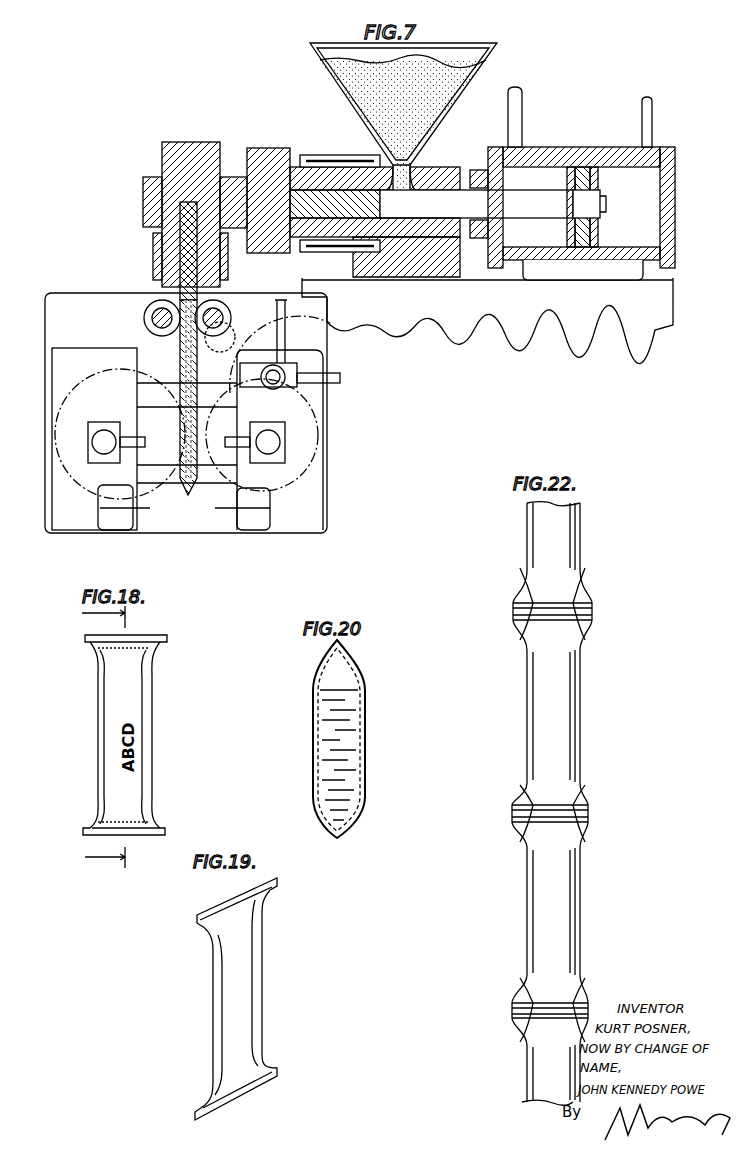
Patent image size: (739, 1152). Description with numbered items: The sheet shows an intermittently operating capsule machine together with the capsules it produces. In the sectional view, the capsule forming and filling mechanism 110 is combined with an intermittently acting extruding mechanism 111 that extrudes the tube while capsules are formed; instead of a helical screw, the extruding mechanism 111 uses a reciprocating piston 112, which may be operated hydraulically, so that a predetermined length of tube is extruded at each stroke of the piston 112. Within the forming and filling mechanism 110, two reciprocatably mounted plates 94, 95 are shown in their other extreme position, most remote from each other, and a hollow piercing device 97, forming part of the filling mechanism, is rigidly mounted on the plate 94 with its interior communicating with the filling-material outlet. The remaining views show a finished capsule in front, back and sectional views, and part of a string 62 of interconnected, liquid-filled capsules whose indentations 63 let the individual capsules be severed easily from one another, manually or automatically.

In FIG. 7, the intermittently acting extruding mechanism 111 is at (437, 167).
In FIG. 7, the reciprocating piston 112 is at (522, 202).
In FIG. 7, the hollow piercing device 97 is at (220, 380).
In FIG. 7, the plate 94 is at (303, 512).
In FIG. 7, the plate 95 is at (60, 510).
In FIG. 7, the capsule forming and filling mechanism 110 is at (150, 453).
In FIG. 22, the string of interconnected capsules 62 is at (558, 717).
In FIG. 22, the indentations 63 is at (592, 615).